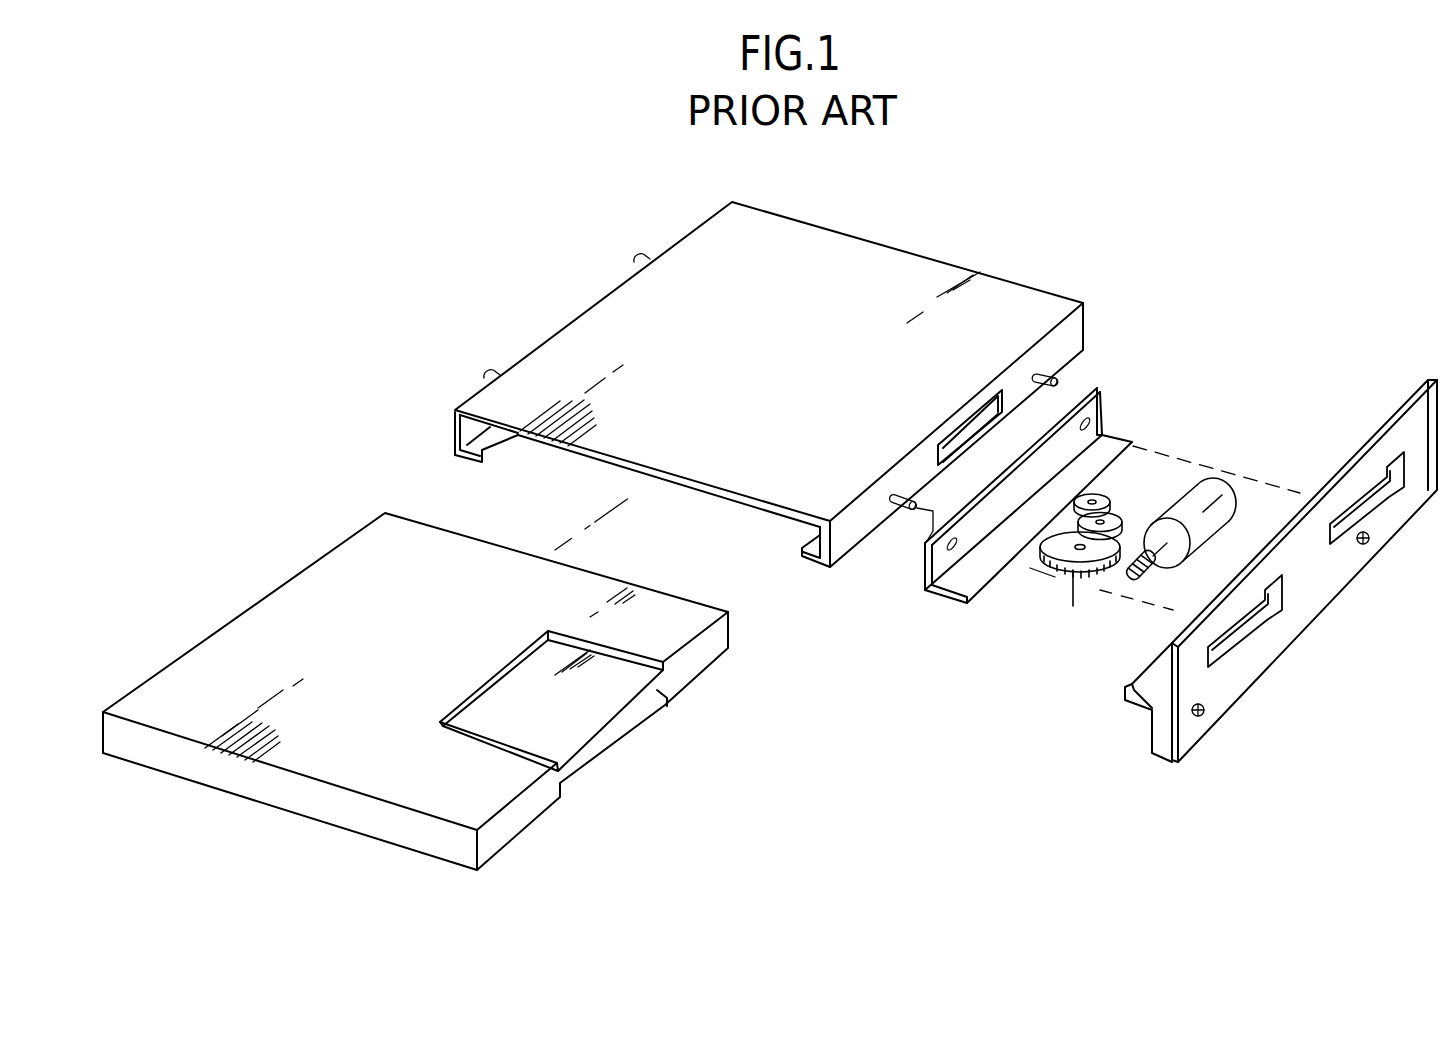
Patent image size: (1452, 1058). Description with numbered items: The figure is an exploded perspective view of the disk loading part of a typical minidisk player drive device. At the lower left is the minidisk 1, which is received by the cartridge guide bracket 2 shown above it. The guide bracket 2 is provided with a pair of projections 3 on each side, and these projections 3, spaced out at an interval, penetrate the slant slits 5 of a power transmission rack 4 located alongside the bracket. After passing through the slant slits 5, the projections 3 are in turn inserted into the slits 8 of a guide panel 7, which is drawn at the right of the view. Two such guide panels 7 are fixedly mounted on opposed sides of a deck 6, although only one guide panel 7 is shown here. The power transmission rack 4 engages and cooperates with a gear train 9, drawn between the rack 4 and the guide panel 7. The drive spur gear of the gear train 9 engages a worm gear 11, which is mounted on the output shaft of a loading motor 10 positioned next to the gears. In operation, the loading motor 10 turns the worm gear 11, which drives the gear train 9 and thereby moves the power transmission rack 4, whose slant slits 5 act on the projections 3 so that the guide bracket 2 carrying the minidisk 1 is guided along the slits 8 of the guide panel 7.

The minidisk 1 is at (310, 593).
The cartridge guide bracket 2 is at (600, 327).
The projections 3 is at (1050, 375).
The power transmission rack 4 is at (925, 575).
The slant slits 5 is at (1108, 398).
The deck 6 is at (1132, 698).
The guide panel 7 is at (1245, 667).
The slits 8 is at (1282, 597).
The gear train 9 is at (1120, 517).
The loading motor 10 is at (1213, 492).
The worm gear 11 is at (1143, 580).